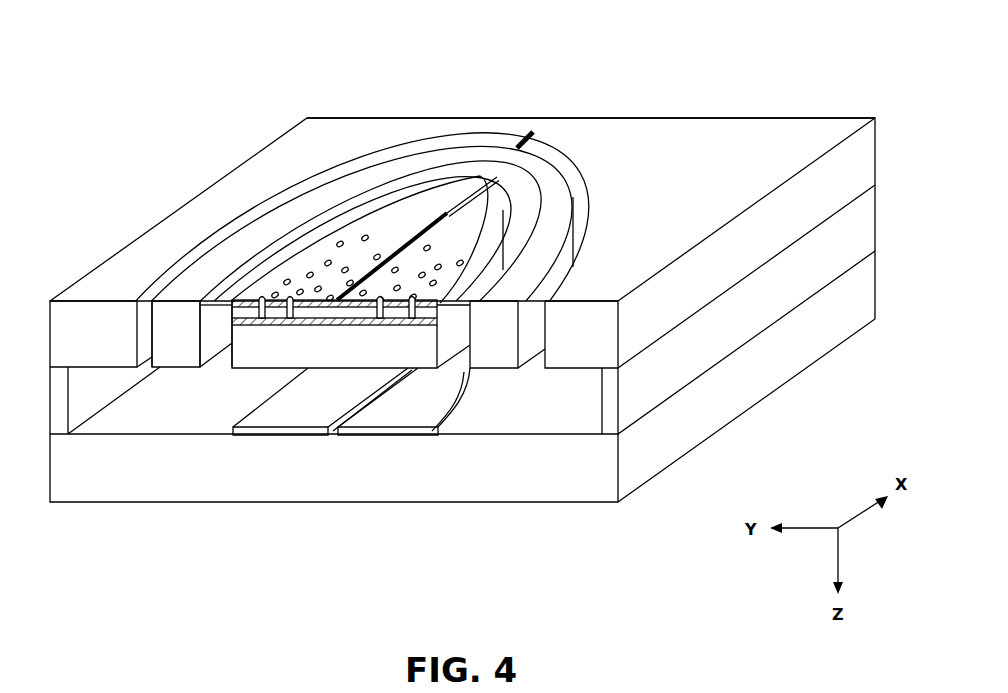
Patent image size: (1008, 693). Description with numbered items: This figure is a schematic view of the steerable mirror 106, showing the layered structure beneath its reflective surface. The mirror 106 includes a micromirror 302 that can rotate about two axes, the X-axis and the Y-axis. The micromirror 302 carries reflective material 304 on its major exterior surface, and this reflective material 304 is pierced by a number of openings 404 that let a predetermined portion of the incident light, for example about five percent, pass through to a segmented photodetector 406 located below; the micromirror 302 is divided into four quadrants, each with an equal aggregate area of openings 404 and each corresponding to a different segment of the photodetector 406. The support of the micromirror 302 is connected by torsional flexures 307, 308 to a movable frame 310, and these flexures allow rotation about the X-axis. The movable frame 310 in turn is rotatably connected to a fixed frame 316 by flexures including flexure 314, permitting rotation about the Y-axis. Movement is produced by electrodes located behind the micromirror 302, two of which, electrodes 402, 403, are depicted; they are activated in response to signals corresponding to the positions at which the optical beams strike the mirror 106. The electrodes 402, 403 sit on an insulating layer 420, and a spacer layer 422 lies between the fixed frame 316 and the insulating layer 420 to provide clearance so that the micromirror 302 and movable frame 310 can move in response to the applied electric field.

The steerable mirror 106 is at (186, 88).
The micromirror 302 is at (507, 172).
The reflective material 304 is at (380, 230).
The torsional flexure 307 is at (215, 300).
The torsional flexure 308 is at (503, 263).
The movable frame 310 is at (245, 247).
The flexure 314 is at (526, 137).
The fixed frame 316 is at (740, 147).
The electrode 402 is at (303, 407).
The electrode 403 is at (407, 415).
The openings 404 is at (503, 210).
The segmented photodetector 406 is at (280, 348).
The insulating layer 420 is at (720, 403).
The spacer layer 422 is at (773, 295).